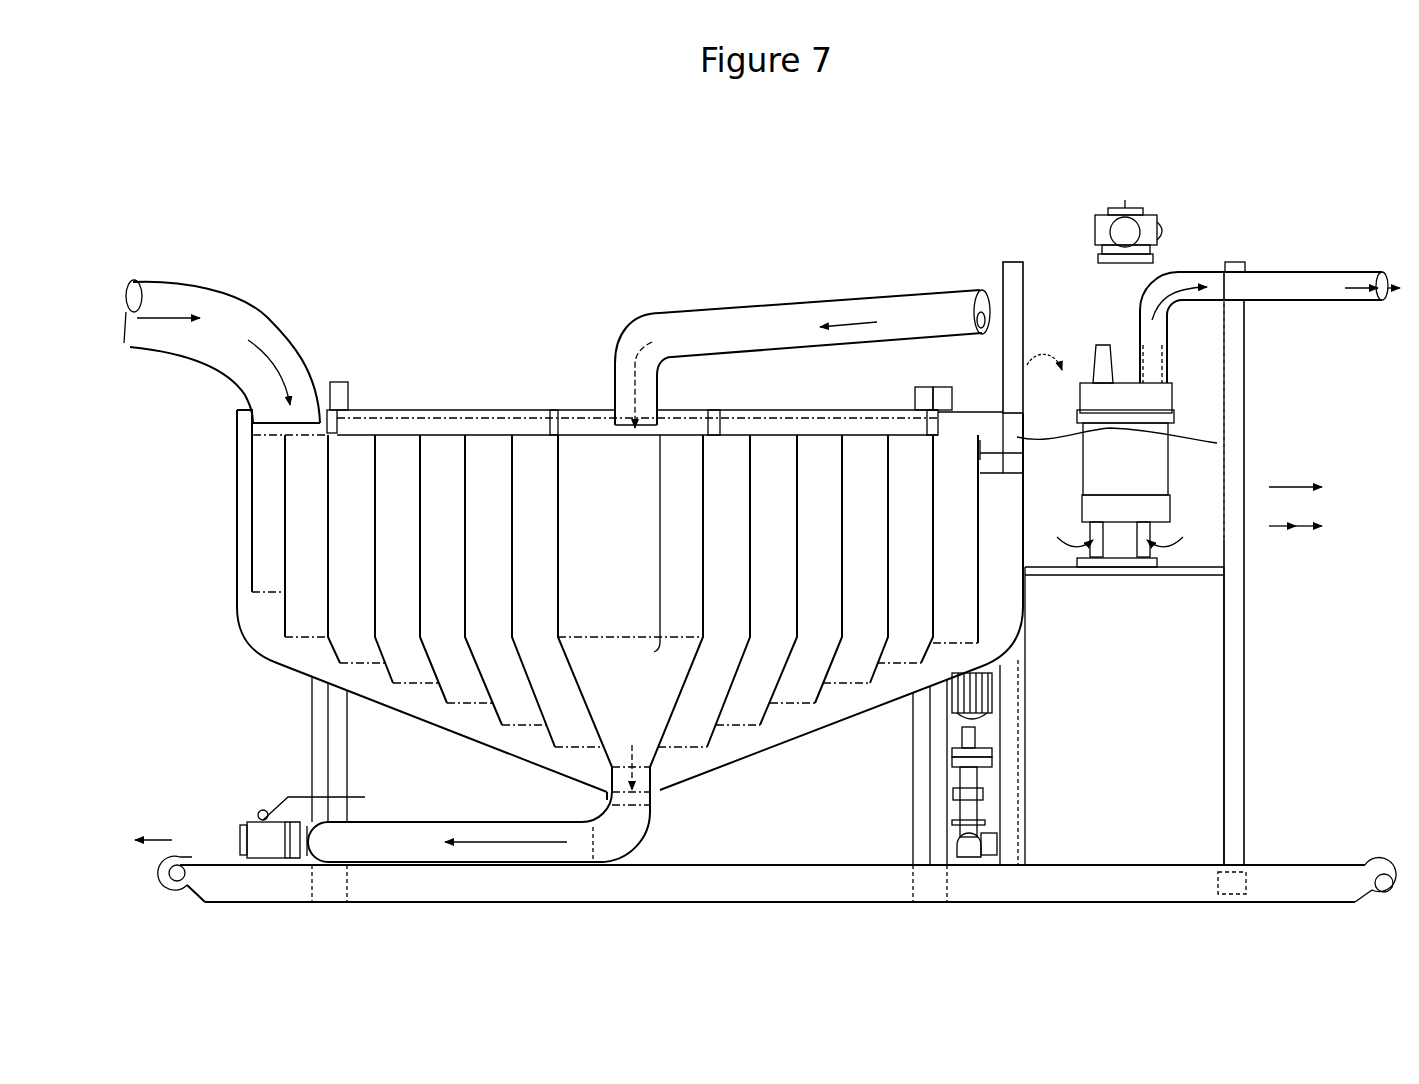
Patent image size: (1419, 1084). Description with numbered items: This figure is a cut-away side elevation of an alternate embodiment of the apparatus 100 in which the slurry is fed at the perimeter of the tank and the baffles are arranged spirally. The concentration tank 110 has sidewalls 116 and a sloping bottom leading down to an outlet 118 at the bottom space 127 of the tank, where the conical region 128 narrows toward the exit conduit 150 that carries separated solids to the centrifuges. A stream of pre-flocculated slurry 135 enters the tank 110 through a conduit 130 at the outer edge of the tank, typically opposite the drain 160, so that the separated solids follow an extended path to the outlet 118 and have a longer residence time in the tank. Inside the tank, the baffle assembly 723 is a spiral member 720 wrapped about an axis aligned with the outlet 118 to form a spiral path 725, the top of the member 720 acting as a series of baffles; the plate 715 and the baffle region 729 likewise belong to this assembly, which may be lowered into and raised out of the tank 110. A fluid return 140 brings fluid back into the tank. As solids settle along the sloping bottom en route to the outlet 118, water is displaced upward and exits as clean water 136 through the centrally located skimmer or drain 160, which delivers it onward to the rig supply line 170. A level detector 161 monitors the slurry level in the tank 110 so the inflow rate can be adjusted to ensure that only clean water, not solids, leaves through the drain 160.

The apparatus 100 is at (864, 246).
The concentration tank 110 is at (237, 478).
The sidewalls 116 is at (237, 555).
The outlet 118 is at (580, 820).
The bottom space 127 is at (610, 793).
The conical bottom 128 is at (663, 767).
The conduit 130 is at (277, 347).
The stream of pre-flocculated slurry 135 is at (227, 323).
The clean water 136 is at (1217, 443).
The fluid return 140 is at (732, 330).
The exit conduit 150 is at (612, 835).
The skimmer or drain 160 is at (1027, 417).
The level detector 161 is at (1022, 413).
The rig supply line 170 is at (1283, 272).
The top plate 715 is at (273, 430).
The spiral member 720 is at (252, 507).
The baffle assembly 723 is at (402, 460).
The spiral path 725 is at (582, 460).
The right baffle plates 729 is at (955, 460).